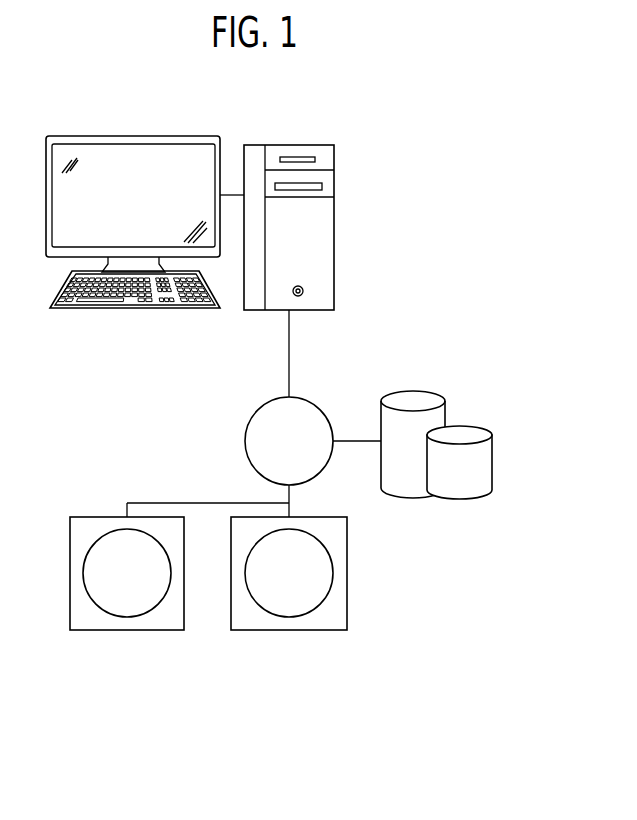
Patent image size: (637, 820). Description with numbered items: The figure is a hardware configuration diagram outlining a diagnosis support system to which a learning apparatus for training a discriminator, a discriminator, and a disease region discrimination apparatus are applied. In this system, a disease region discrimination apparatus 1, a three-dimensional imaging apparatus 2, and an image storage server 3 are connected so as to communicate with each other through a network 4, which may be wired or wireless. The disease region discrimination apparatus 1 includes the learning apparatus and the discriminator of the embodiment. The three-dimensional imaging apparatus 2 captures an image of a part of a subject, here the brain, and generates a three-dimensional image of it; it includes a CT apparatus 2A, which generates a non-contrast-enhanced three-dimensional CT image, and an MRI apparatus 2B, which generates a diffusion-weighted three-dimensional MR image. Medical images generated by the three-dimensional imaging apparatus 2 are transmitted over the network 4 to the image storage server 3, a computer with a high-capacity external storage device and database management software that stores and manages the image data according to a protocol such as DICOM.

The disease region discrimination apparatus 1 is at (300, 145).
The three-dimensional imaging apparatus 2 is at (208, 635).
The CT apparatus 2A is at (115, 632).
The MRI apparatus 2B is at (289, 611).
The image storage server 3 is at (412, 490).
The network 4 is at (316, 404).